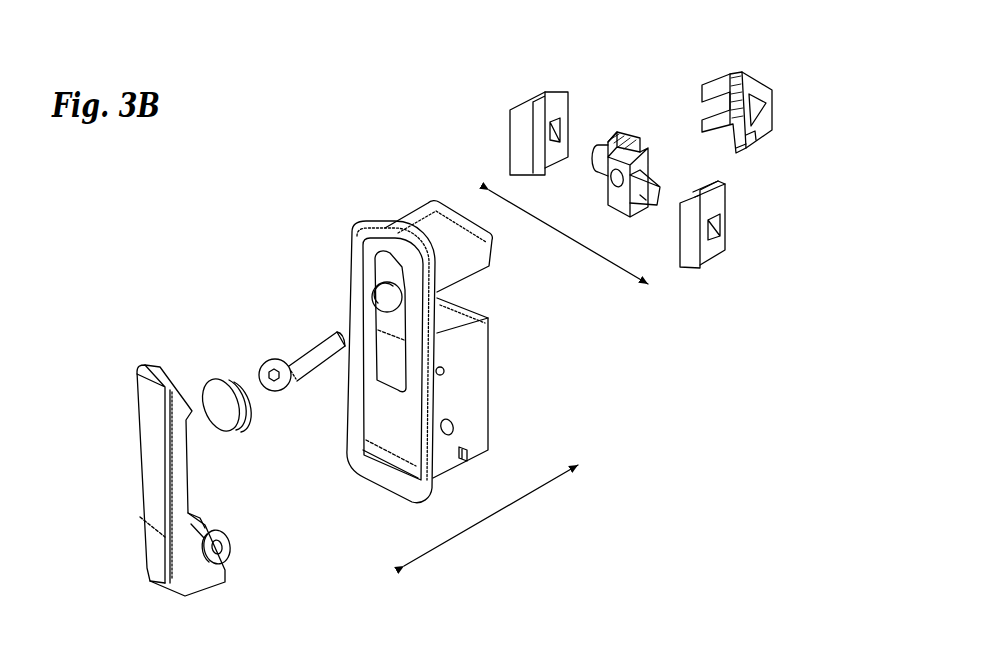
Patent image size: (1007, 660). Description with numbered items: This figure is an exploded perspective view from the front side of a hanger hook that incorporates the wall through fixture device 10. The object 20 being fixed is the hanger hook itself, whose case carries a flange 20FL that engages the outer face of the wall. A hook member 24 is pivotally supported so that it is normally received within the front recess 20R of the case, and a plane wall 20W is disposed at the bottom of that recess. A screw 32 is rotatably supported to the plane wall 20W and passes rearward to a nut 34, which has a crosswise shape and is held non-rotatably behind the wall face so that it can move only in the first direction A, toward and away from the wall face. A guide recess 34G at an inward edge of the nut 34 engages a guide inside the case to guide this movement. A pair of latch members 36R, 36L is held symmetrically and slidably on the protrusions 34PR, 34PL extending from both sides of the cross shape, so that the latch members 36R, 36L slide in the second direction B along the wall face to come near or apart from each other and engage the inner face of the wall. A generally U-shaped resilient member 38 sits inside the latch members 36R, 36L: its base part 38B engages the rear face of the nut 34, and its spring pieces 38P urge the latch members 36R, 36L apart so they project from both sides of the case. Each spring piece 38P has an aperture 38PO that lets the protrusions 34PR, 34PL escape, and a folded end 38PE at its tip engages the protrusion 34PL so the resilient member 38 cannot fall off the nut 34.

The wall through fixture device 10 is at (604, 102).
The object 20 is at (368, 311).
The flange 20FL is at (358, 257).
The plane wall 20W is at (360, 335).
The front recess 20R is at (368, 362).
The hook member 24 is at (148, 472).
The screw 32 is at (312, 346).
The nut 34 is at (602, 166).
The guide recess 34G is at (634, 137).
The protrusion 34PL is at (604, 184).
The protrusion 34PR is at (635, 208).
The latch member 36L is at (514, 106).
The latch member 36R is at (707, 260).
The resilient member 38 is at (737, 100).
The base part 38B is at (786, 58).
The spring piece 38P is at (716, 74).
The folded end 38PE is at (702, 94).
The aperture 38PO is at (728, 150).
The first direction A is at (493, 518).
The second direction B is at (566, 243).